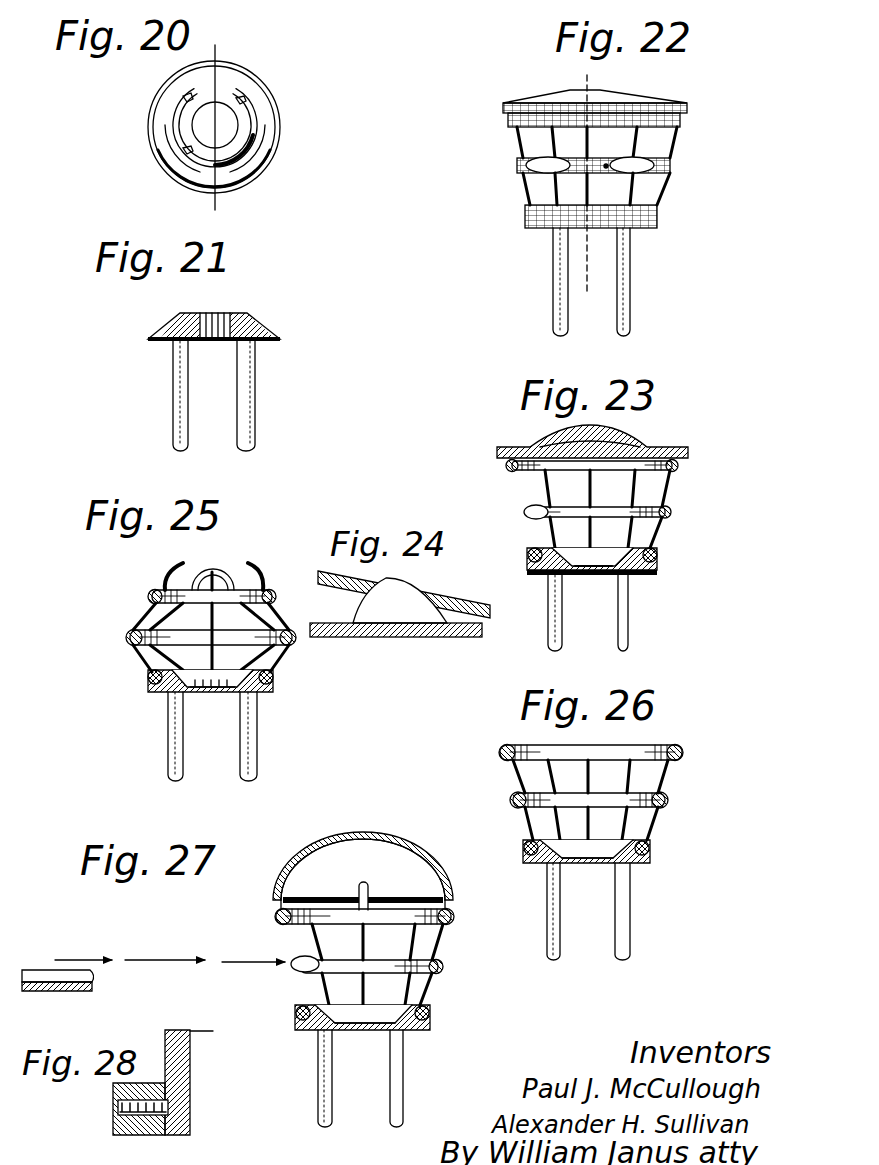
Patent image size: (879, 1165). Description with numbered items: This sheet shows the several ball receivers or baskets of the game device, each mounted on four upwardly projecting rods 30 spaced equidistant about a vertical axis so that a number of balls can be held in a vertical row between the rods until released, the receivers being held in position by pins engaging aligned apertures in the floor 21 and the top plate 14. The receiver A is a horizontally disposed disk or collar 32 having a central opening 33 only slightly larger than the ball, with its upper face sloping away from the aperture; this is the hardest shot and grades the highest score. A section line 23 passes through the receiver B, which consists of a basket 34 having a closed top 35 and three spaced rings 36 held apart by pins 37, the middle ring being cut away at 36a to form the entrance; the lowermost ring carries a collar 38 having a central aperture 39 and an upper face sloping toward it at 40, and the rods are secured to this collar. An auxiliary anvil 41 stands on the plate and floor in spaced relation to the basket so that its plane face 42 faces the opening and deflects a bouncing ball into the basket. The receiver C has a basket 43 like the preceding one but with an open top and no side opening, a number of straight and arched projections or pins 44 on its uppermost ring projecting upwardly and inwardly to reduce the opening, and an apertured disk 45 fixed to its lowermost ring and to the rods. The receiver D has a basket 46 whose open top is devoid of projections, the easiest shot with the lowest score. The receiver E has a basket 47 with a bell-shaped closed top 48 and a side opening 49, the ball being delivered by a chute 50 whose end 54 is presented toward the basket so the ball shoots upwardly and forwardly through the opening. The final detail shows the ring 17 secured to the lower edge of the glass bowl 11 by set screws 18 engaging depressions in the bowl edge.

In FIG. 20, the receiver A is at (214, 131).
In FIG. 21, the receiver A is at (205, 366).
In FIG. 22, the receiver B is at (599, 192).
In FIG. 23, the receiver B is at (591, 528).
In FIG. 25, the receiver C is at (171, 655).
In FIG. 26, the receiver D is at (613, 853).
In FIG. 27, the receiver E is at (376, 958).
In FIG. 28, the glass bowl 11 is at (182, 1027).
In FIG. 24, the top plate 14 is at (352, 637).
In FIG. 28, the ring 17 is at (113, 1135).
In FIG. 28, the set screws 18 is at (115, 1105).
In FIG. 20, the floor 21 is at (216, 131).
In FIG. 24, the floor 21 is at (406, 594).
In FIG. 22, the section line 23 is at (587, 75).
In FIG. 20, the rods 30 is at (183, 150).
In FIG. 21, the rods 30 is at (246, 424).
In FIG. 22, the rods 30 is at (555, 315).
In FIG. 23, the rods 30 is at (557, 627).
In FIG. 25, the rods 30 is at (245, 748).
In FIG. 26, the rods 30 is at (553, 910).
In FIG. 27, the rods 30 is at (392, 1092).
In FIG. 20, the disk or collar 32 is at (281, 131).
In FIG. 21, the disk or collar 32 is at (150, 336).
In FIG. 20, the central opening 33 is at (230, 145).
In FIG. 21, the central opening 33 is at (214, 323).
In FIG. 22, the basket 34 is at (515, 213).
In FIG. 23, the basket 34 is at (503, 478).
In FIG. 22, the closed top 35 is at (548, 97).
In FIG. 23, the closed top 35 is at (530, 448).
In FIG. 22, the rings 36 is at (523, 210).
In FIG. 23, the rings 36 is at (680, 465).
In FIG. 22, the cut-away opening 36a is at (608, 168).
In FIG. 23, the cut-away opening 36a is at (524, 512).
In FIG. 22, the pins 37 is at (655, 190).
In FIG. 23, the pins 37 is at (548, 535).
In FIG. 22, the collar 38 is at (528, 224).
In FIG. 23, the collar 38 is at (650, 575).
In FIG. 26, the collar 38 is at (526, 862).
In FIG. 27, the collar 38 is at (428, 1033).
In FIG. 23, the central aperture 39 is at (598, 576).
In FIG. 23, the sloping upper face 40 is at (625, 558).
In FIG. 24, the auxiliary anvil 41 is at (400, 600).
In FIG. 24, the plane face 42 is at (418, 592).
In FIG. 25, the basket 43 is at (120, 637).
In FIG. 25, the projections or pins 44 is at (215, 568).
In FIG. 25, the apertured disk 45 is at (150, 688).
In FIG. 26, the basket 46 is at (652, 845).
In FIG. 27, the basket 47 is at (442, 972).
In FIG. 27, the closed top 48 is at (388, 838).
In FIG. 27, the side opening 49 is at (300, 973).
In FIG. 27, the chute 50 is at (153, 970).
In FIG. 27, the discharge end of chute 54 is at (70, 992).